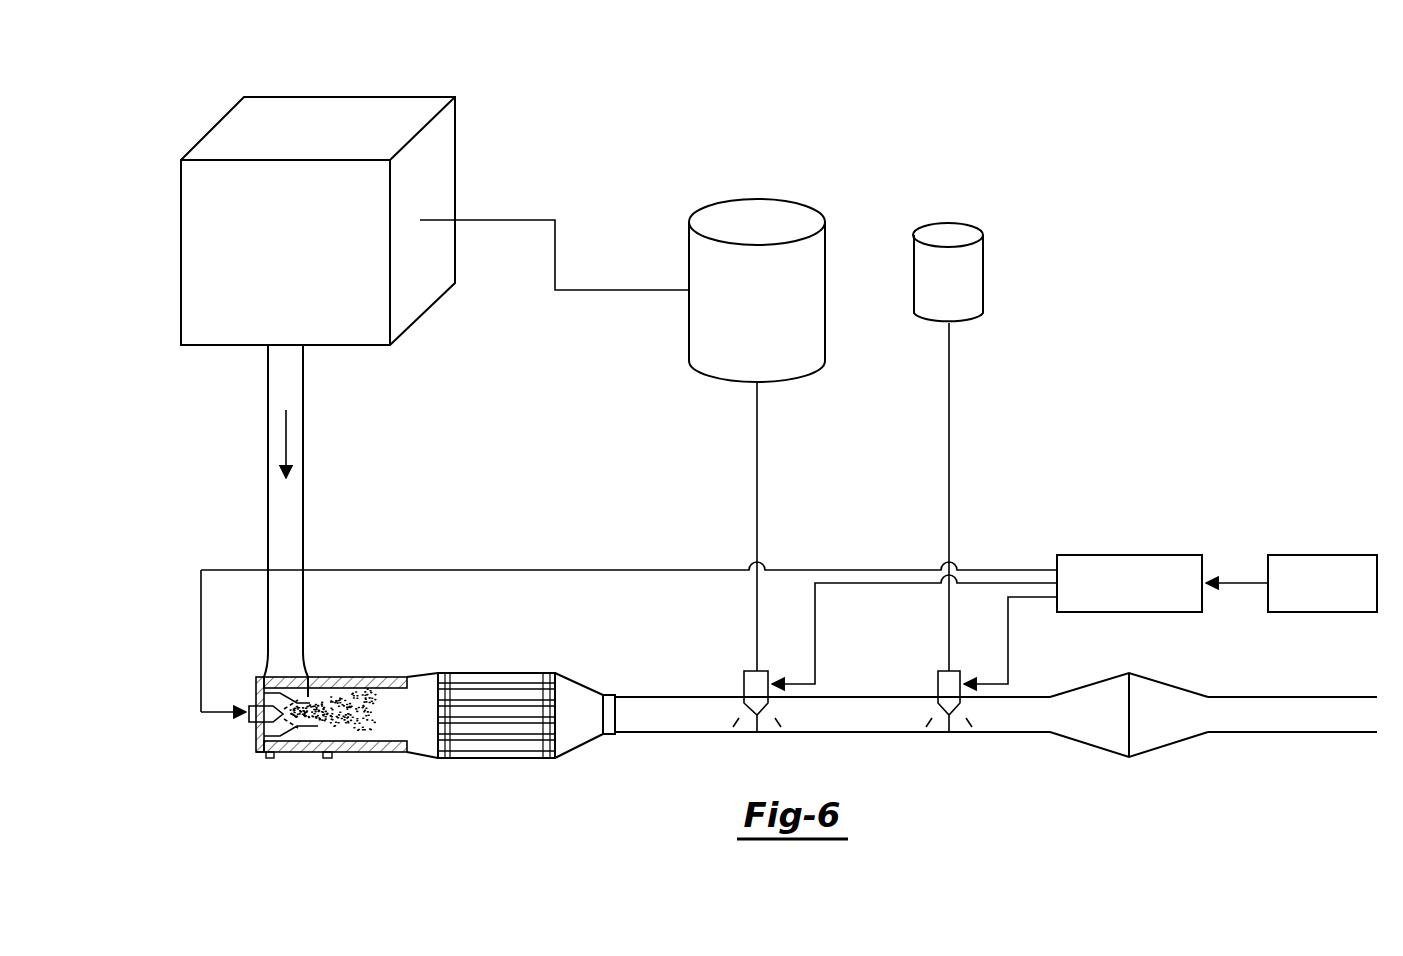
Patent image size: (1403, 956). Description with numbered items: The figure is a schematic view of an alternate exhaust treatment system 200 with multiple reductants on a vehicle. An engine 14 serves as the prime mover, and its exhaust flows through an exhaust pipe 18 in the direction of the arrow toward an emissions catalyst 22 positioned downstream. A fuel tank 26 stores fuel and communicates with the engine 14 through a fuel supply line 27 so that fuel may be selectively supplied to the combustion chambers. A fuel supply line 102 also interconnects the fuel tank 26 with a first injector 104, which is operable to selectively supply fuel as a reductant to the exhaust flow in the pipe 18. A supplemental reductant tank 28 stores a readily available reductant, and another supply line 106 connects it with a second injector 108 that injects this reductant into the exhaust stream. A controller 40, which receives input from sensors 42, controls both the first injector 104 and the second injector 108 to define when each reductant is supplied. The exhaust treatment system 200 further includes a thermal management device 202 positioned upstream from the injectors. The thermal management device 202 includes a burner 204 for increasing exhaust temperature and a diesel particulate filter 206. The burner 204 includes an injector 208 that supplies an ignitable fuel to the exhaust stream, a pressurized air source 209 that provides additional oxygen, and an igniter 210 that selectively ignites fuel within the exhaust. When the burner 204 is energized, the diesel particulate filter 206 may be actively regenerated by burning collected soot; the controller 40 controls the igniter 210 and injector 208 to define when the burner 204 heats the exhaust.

The engine 14 is at (348, 110).
The exhaust pipe 18 is at (303, 522).
The emissions catalyst 22 is at (1166, 748).
The fuel tank 26 is at (757, 214).
The fuel supply line 27 is at (620, 292).
The supplemental reductant tank 28 is at (949, 230).
The controller 40 is at (1130, 553).
The sensors 42 is at (1325, 553).
The fuel supply line 102 is at (757, 449).
The first injector 104 is at (744, 681).
The supply line 106 is at (949, 375).
The second injector 108 is at (938, 681).
The exhaust treatment system 200 is at (1060, 192).
The thermal management device 202 is at (388, 778).
The burner 204 is at (258, 752).
The diesel particulate filter 206 is at (498, 758).
The injector 208 is at (252, 712).
The pressurized air source 209 is at (270, 758).
The igniter 210 is at (327, 758).